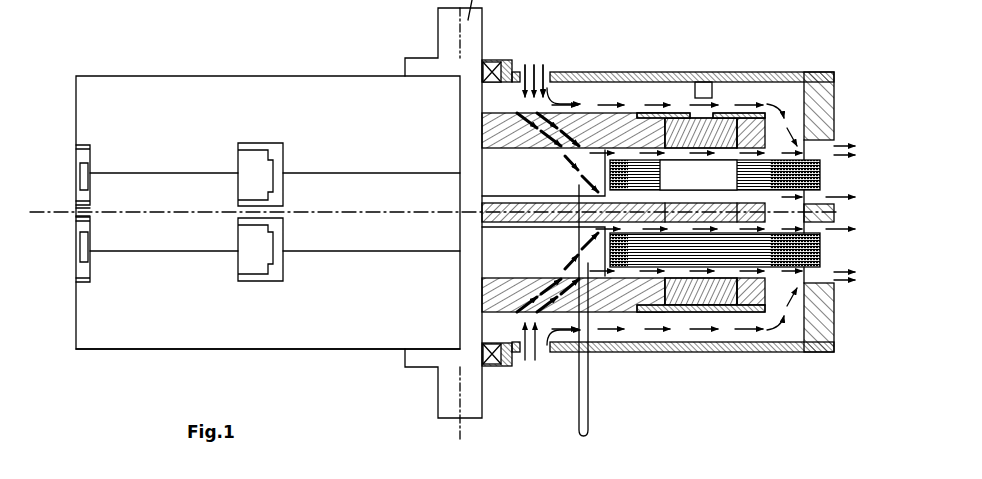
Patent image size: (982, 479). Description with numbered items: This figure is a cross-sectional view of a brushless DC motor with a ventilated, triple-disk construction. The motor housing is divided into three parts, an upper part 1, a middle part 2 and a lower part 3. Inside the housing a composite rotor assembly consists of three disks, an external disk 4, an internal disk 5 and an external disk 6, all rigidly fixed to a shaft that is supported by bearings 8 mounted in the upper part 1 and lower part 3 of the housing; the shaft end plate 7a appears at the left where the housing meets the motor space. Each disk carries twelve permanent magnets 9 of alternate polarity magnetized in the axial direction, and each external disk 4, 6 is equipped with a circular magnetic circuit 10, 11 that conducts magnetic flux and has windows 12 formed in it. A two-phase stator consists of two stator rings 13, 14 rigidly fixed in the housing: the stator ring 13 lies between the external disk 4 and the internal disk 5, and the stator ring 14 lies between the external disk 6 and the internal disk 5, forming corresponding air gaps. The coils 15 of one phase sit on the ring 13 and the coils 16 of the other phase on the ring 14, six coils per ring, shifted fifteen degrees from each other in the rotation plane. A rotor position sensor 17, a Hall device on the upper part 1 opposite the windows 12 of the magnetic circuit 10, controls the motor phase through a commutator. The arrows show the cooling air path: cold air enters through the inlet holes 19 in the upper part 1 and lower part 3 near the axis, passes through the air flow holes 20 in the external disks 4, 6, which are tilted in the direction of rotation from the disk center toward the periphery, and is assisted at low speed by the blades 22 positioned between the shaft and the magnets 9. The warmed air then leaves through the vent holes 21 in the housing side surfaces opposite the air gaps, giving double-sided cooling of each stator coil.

The upper part of the housing 1 is at (113, 118).
The middle part of the housing 2 is at (123, 221).
The lower part of the housing 3 is at (100, 313).
The external rotor disk 4 is at (625, 130).
The internal rotor disk 5 is at (833, 215).
The external rotor disk 6 is at (626, 295).
The end plate 7a is at (460, 432).
The bearings 8 is at (492, 65).
The permanent magnets 9 is at (677, 133).
The circular magnetic circuit 10 is at (655, 115).
The circular magnetic circuit 11 is at (745, 306).
The windows 12 is at (713, 117).
The stator ring 13 is at (807, 178).
The stator ring 14 is at (747, 252).
The coils 15 is at (765, 163).
The coils 16 is at (768, 263).
The rotor position sensor 17 is at (710, 92).
The cold air intake holes 19 is at (531, 68).
The air flow holes 20 is at (553, 135).
The vent holes 21 is at (80, 158).
The blades 22 is at (586, 323).